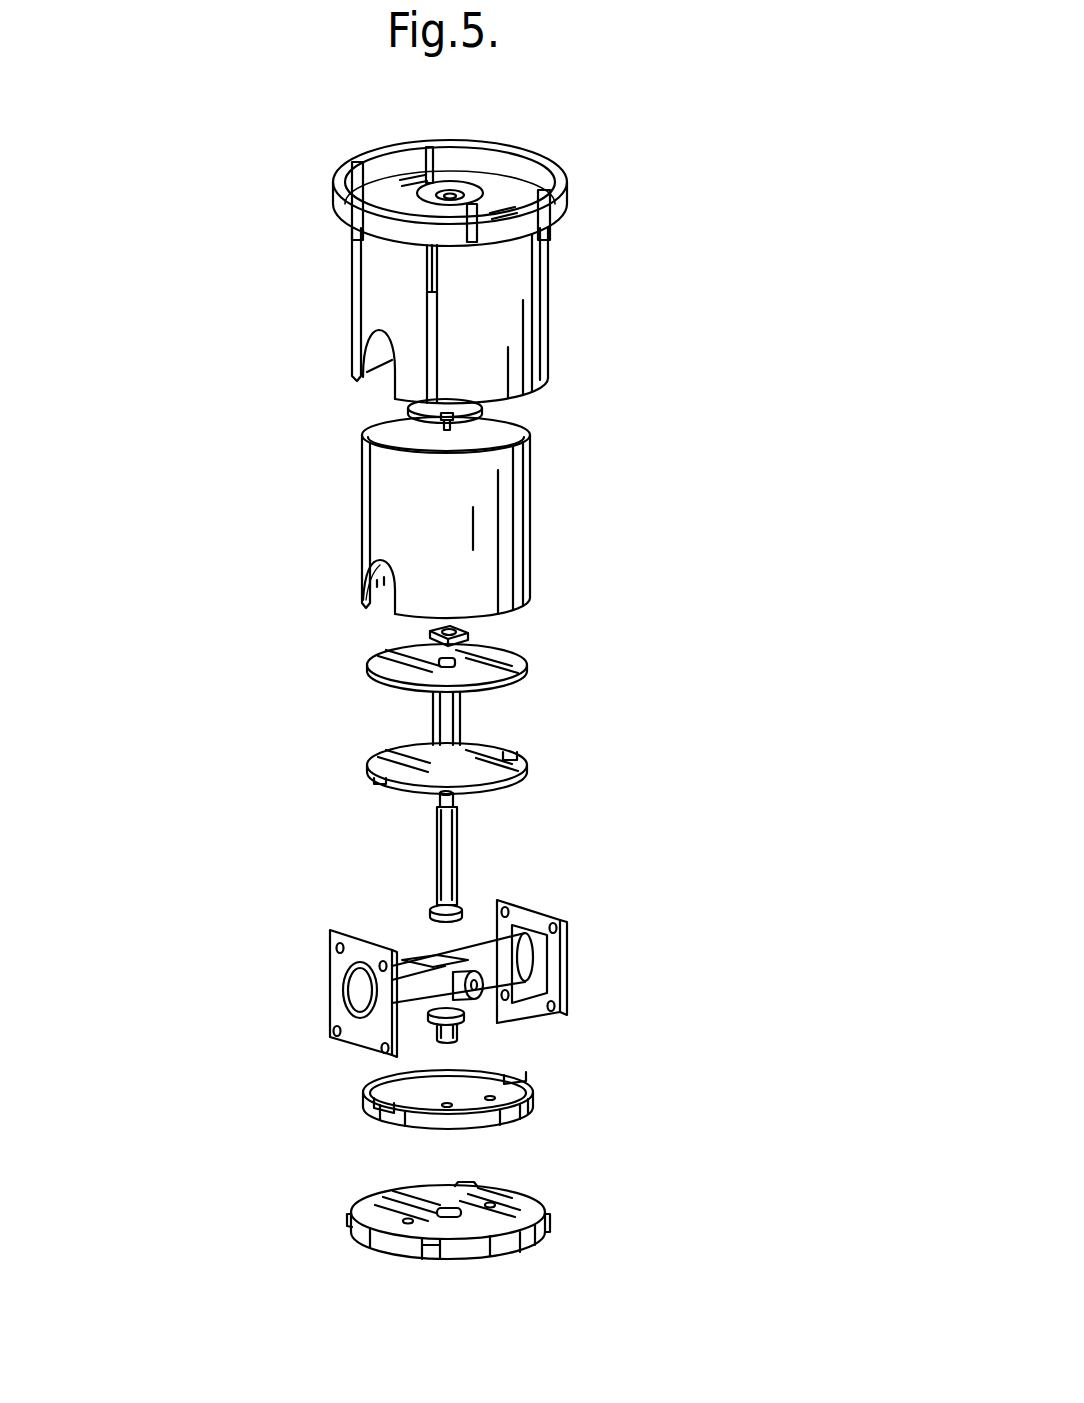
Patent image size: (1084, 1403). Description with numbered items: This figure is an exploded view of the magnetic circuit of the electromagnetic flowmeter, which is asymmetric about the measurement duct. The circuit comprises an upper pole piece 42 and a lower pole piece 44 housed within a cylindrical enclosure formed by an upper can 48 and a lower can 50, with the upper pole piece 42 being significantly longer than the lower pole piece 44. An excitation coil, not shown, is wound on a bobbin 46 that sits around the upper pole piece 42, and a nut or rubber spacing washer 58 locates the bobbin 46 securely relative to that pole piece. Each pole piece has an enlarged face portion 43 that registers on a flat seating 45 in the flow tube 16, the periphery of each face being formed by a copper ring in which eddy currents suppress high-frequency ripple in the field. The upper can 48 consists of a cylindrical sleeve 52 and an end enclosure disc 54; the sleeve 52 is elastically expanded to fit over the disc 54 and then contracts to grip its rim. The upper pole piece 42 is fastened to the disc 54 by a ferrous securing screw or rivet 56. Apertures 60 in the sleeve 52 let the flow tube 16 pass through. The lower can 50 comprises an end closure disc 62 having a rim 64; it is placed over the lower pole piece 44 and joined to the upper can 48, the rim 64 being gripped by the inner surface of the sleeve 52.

The end enclosure disc 54 is at (495, 427).
The securing screw or rivet 56 is at (440, 416).
The upper can 48 is at (383, 507).
The cylindrical sleeve 52 is at (513, 537).
The apertures 60 is at (381, 603).
The nut or rubber spacing washer 58 is at (470, 640).
The bobbin 46 is at (376, 660).
The upper pole piece 42 is at (450, 840).
The enlarged face portion 43 is at (463, 913).
The flat seating 45 is at (448, 963).
The flow tube 16 is at (563, 972).
The lower pole piece 44 is at (465, 1030).
The lower can 50 is at (400, 1117).
The end closure disc 62 is at (463, 1100).
The rim 64 is at (518, 1113).